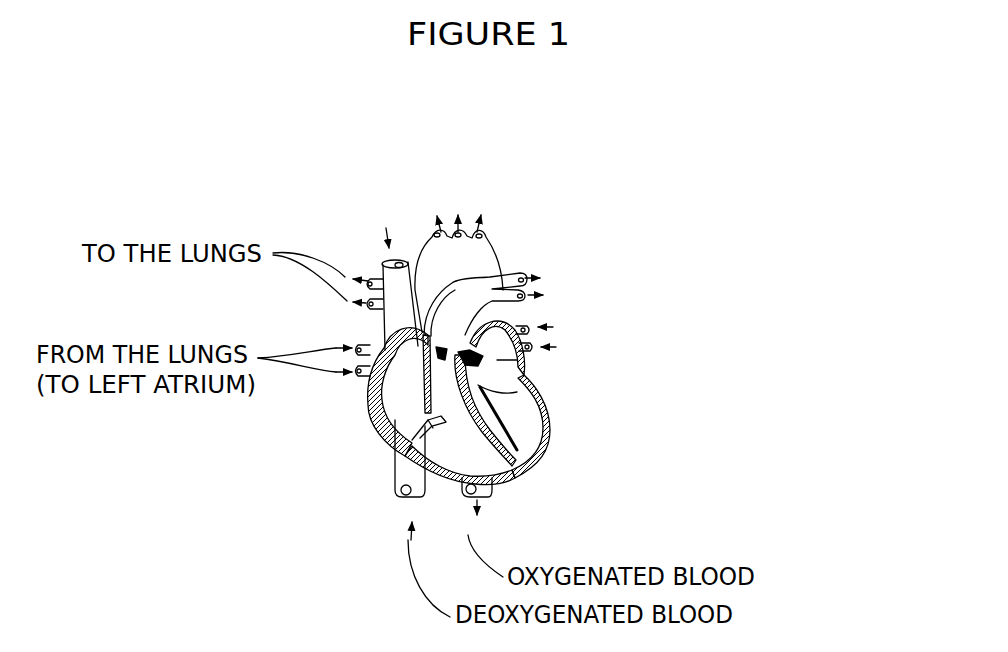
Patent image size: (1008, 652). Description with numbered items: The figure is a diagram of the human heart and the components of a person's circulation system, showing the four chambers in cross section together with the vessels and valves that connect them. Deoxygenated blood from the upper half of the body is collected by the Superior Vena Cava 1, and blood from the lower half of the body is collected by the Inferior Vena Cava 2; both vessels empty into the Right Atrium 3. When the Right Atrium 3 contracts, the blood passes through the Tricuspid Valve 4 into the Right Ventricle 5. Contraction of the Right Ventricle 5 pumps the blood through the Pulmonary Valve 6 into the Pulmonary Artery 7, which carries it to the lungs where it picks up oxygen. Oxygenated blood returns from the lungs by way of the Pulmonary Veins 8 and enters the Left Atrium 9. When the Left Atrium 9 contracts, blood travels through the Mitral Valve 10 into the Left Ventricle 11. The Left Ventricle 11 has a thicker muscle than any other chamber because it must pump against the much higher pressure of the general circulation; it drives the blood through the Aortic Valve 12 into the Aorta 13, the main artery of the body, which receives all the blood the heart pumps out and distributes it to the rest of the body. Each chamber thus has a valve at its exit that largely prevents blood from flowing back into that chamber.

The Superior Vena Cava 1 is at (386, 228).
The Inferior Vena Cava 2 is at (398, 483).
The Right Atrium 3 is at (398, 392).
The Tricuspid Valve 4 is at (392, 421).
The Right Ventricle 5 is at (508, 482).
The Pulmonary Valve 6 is at (432, 345).
The Pulmonary Artery 7 is at (546, 279).
The Pulmonary Veins 8 is at (556, 347).
The Left Atrium 9 is at (518, 357).
The Mitral Valve 10 is at (505, 396).
The Left Ventricle 11 is at (525, 438).
The Aortic Valve 12 is at (488, 358).
The Aorta 13 is at (487, 254).